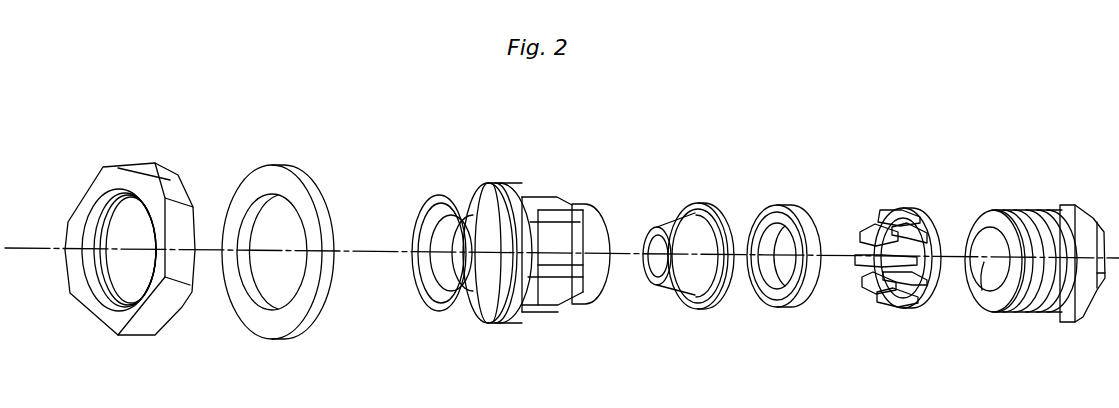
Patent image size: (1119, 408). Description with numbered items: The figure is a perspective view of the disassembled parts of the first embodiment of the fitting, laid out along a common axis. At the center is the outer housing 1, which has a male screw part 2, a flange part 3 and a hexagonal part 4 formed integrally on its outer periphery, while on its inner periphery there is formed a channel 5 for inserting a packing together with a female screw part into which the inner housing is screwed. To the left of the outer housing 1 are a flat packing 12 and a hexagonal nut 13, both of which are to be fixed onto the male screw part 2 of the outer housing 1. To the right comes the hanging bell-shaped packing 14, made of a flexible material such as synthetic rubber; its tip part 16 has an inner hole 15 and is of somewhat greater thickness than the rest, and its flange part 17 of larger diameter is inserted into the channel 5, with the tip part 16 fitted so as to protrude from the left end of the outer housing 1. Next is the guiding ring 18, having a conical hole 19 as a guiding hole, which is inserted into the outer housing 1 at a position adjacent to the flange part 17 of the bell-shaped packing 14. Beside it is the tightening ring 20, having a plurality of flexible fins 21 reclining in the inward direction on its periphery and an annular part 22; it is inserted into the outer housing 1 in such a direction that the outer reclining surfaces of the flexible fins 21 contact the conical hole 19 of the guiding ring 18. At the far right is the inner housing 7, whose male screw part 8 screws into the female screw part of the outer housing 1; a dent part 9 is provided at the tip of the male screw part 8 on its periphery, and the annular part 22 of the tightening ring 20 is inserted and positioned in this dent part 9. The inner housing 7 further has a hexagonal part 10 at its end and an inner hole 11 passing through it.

The outer housing 1 is at (511, 250).
The male screw part 2 is at (460, 195).
The flange part 3 is at (498, 182).
The hexagonal part 4 is at (543, 197).
The channel for inserting a packing 5 is at (460, 273).
The inner housing 7 is at (1031, 256).
The male screw part 8 is at (1007, 210).
The dent part 9 is at (983, 212).
The hexagonal part 10 is at (1087, 210).
The inner hole 11 is at (988, 277).
The flat packing 12 is at (272, 165).
The hexagonal nut 13 is at (135, 163).
The hanging bell-shaped packing 14 is at (696, 254).
The inner hole 15 is at (650, 267).
The tip part 16 is at (653, 230).
The flange part 17 is at (713, 207).
The guiding ring 18 is at (783, 254).
The conical hole 19 is at (770, 283).
The tightening ring 20 is at (901, 256).
The flexible fins 21 is at (908, 292).
The annular part 22 is at (927, 295).